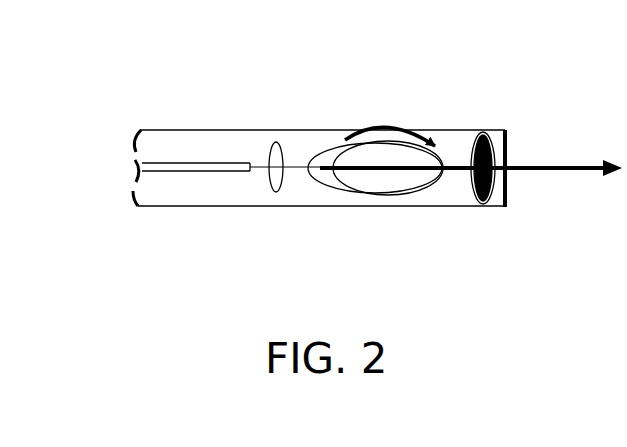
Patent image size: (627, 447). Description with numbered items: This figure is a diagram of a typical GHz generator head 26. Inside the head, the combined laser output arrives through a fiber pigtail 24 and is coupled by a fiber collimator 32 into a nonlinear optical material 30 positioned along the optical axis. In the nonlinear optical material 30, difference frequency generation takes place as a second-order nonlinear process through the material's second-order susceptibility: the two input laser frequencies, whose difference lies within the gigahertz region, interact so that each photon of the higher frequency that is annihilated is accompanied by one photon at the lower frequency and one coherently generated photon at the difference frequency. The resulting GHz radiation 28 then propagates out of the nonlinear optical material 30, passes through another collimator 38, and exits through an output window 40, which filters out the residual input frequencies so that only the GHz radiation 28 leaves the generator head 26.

The fiber pigtail 24 is at (203, 178).
The GHz generator head 26 is at (219, 128).
The GHz radiation 28 is at (556, 166).
The nonlinear optical (NLO) material 30 is at (384, 198).
The fiber collimator 32 is at (279, 132).
The collimator 38 is at (488, 130).
The output window 40 is at (508, 208).